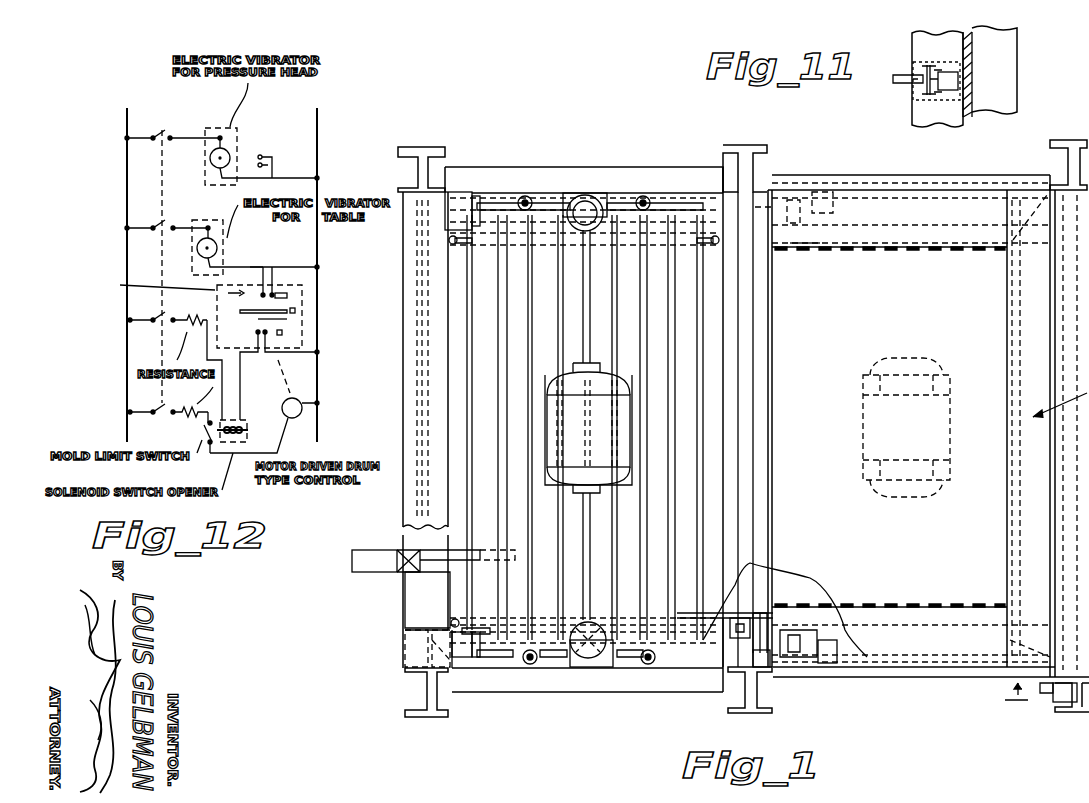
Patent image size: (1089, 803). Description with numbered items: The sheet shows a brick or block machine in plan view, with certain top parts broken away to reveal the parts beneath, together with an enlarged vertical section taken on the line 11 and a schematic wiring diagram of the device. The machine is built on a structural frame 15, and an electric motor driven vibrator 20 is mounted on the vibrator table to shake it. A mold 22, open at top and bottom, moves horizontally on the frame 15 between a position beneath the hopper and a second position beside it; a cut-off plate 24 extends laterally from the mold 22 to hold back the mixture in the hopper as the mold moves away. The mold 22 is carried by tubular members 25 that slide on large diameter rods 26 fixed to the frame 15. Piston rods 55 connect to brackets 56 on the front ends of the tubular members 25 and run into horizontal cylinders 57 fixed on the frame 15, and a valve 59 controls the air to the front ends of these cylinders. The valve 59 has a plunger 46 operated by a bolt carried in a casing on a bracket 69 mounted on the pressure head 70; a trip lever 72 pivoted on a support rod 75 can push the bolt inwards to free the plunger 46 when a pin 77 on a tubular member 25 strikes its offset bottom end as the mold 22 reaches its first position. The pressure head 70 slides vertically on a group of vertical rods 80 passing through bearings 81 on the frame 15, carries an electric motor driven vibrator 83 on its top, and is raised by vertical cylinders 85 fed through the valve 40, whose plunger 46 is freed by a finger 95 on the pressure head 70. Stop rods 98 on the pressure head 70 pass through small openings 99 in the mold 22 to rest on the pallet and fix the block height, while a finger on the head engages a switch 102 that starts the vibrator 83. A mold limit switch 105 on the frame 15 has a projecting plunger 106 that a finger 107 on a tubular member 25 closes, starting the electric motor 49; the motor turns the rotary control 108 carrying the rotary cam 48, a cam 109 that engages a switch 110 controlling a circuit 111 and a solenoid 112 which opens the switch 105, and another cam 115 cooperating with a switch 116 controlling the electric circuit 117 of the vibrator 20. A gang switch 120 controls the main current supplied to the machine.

In FIG. 1, the section line 11 is at (1010, 691).
In FIG. 11, the structural frame 15 is at (1024, 66).
In FIG. 1, the structural frame 15 is at (409, 392).
In FIG. 12, the electric motor driven vibrator 20 is at (187, 238).
In FIG. 1, the electric motor driven vibrator 20 is at (863, 437).
In FIG. 1, the mold 22 is at (418, 582).
In FIG. 1, the cut-off plate 24 is at (983, 520).
In FIG. 1, the tubular members 25 is at (707, 200).
In FIG. 1, the large diameter rods 26 is at (455, 212).
In FIG. 1, the valve 40 is at (350, 561).
In FIG. 12, the plunger 46 is at (298, 309).
In FIG. 12, the rotary cam 48 is at (280, 318).
In FIG. 12, the electric motor 49 is at (300, 398).
In FIG. 1, the piston rods 55 is at (755, 207).
In FIG. 1, the brackets 56 is at (468, 220).
In FIG. 1, the horizontal cylinders 57 is at (800, 225).
In FIG. 1, the valve 59 is at (740, 618).
In FIG. 1, the bracket 69 is at (708, 640).
In FIG. 1, the pressure head 70 is at (693, 488).
In FIG. 1, the trip lever 72 is at (797, 630).
In FIG. 1, the support rod 75 is at (762, 613).
In FIG. 1, the pin 77 is at (515, 620).
In FIG. 1, the vertical rods 80 is at (528, 197).
In FIG. 1, the bearings 81 is at (533, 200).
In FIG. 12, the electric motor driven vibrator 83 is at (207, 160).
In FIG. 1, the electric motor driven vibrator 83 is at (623, 450).
In FIG. 1, the vertical cylinders 85 is at (578, 235).
In FIG. 1, the finger 95 is at (432, 550).
In FIG. 1, the stop rods 98 is at (463, 246).
In FIG. 1, the small openings 99 is at (450, 243).
In FIG. 12, the switch 102 is at (297, 140).
In FIG. 12, the mold limit switch 105 is at (205, 428).
In FIG. 11, the mold limit switch 105 is at (922, 102).
In FIG. 1, the mold limit switch 105 is at (1050, 640).
In FIG. 11, the projecting plunger 106 is at (900, 83).
In FIG. 1, the projecting plunger 106 is at (1050, 700).
In FIG. 1, the finger 107 is at (742, 667).
In FIG. 12, the rotary control 108 is at (150, 285).
In FIG. 12, the cam 109 is at (285, 335).
In FIG. 12, the switch 110 is at (257, 334).
In FIG. 12, the circuit 111 is at (243, 385).
In FIG. 12, the solenoid 112 is at (244, 416).
In FIG. 11, the solenoid 112 is at (953, 80).
In FIG. 12, the cam 115 is at (290, 295).
In FIG. 12, the switch 116 is at (267, 277).
In FIG. 12, the electric circuit 117 is at (250, 267).
In FIG. 12, the gang switch 120 is at (160, 195).